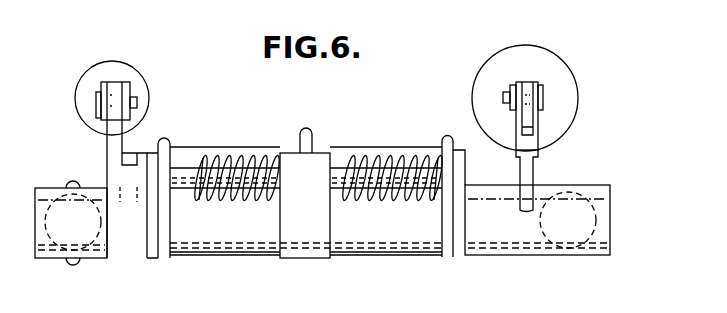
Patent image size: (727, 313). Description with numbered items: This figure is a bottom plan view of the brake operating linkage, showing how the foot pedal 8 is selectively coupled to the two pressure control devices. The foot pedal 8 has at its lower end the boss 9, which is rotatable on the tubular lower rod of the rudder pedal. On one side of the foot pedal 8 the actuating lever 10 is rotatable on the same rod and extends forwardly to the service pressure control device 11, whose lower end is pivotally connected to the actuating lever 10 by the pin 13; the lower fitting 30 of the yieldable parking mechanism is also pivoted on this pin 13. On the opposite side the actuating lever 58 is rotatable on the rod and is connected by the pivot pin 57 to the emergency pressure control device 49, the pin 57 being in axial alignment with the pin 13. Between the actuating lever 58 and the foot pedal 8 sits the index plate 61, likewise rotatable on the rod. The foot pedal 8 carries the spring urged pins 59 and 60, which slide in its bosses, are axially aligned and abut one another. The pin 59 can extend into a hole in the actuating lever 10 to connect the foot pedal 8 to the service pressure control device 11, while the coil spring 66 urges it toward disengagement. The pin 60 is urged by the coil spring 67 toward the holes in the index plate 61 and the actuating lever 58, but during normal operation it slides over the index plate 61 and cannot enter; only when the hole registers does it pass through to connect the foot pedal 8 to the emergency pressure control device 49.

The foot pedal 8 is at (350, 144).
The boss 9 is at (387, 250).
The actuating lever 10 is at (535, 172).
The service pressure control device 11 is at (584, 106).
The pin 13 is at (542, 92).
The lower fitting 30 is at (527, 82).
The emergency pressure control device 49 is at (156, 108).
The pin 57 is at (134, 97).
The actuating lever 58 is at (113, 143).
The spring urged pin 59 is at (402, 155).
The spring urged pin 60 is at (240, 157).
The index plate 61 is at (157, 257).
The coil spring 66 is at (420, 202).
The coil spring 67 is at (248, 202).